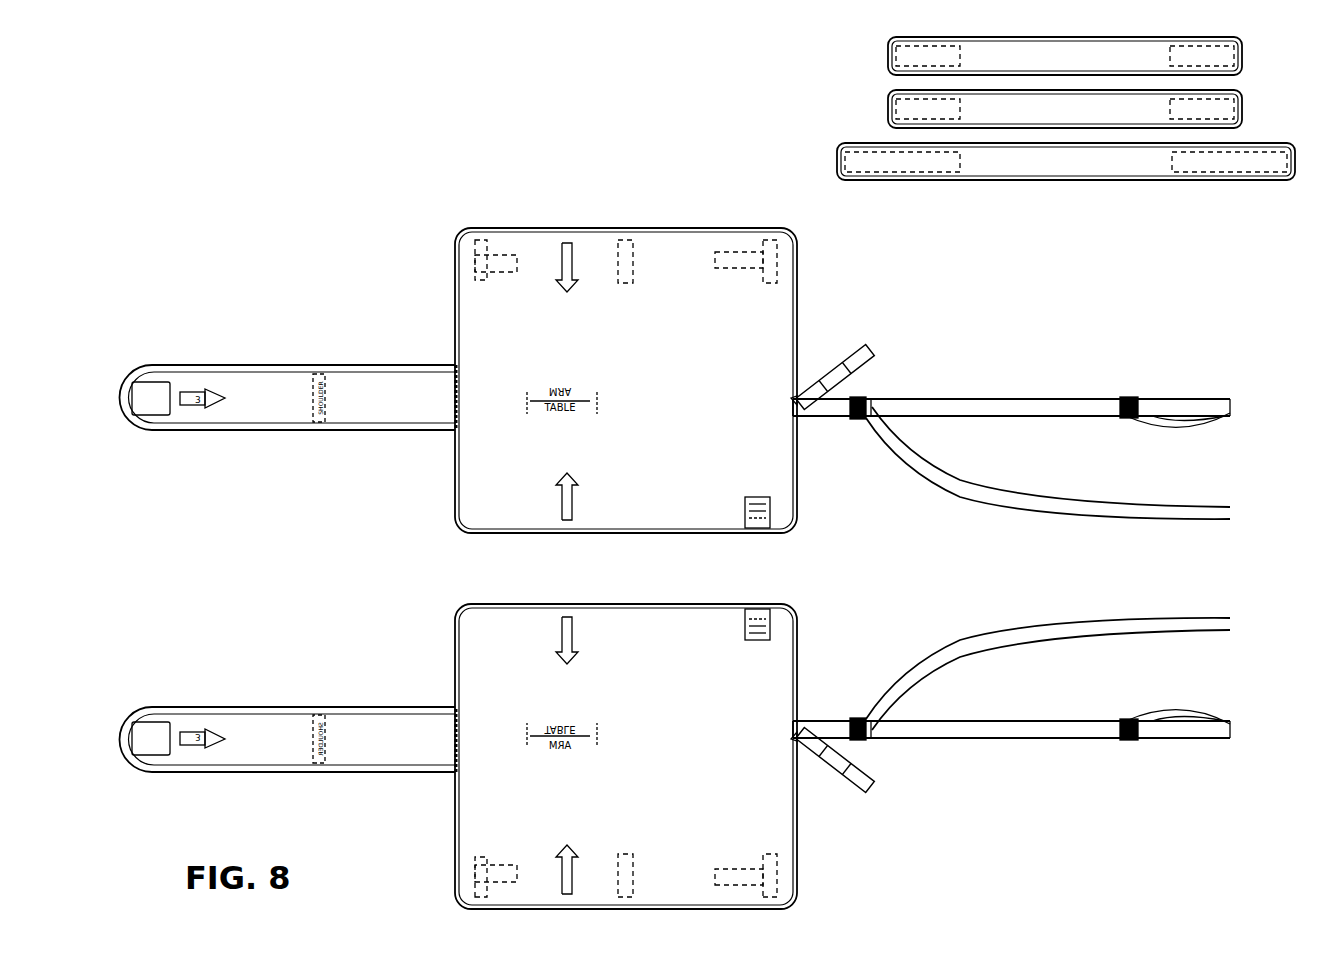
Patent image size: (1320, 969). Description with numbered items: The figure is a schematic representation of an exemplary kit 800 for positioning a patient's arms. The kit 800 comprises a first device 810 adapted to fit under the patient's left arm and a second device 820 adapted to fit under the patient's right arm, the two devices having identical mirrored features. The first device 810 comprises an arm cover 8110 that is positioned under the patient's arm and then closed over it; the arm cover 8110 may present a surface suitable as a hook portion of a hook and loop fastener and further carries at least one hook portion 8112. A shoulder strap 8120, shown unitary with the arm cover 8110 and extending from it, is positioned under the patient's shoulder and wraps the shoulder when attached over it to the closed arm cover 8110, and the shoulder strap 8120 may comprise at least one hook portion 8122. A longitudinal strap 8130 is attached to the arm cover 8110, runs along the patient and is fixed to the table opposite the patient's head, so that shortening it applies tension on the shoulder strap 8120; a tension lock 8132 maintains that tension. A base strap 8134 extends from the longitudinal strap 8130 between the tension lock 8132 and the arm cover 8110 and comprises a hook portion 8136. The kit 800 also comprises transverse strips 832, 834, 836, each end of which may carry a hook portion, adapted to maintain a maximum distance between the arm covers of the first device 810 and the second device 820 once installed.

The kit 800 is at (348, 96).
The first device 810 is at (797, 307).
The second device 820 is at (790, 845).
The transverse strip 832 is at (888, 53).
The transverse strip 834 is at (888, 105).
The transverse strip 836 is at (837, 160).
The arm cover 8110 is at (555, 232).
The hook portion 8112 is at (735, 259).
The shoulder strap 8120 is at (240, 370).
The hook portion 8122 is at (150, 403).
The longitudinal strap 8130 is at (1040, 458).
The tension lock 8132 is at (857, 421).
The base strap 8134 is at (805, 398).
The hook portion 8136 is at (852, 363).